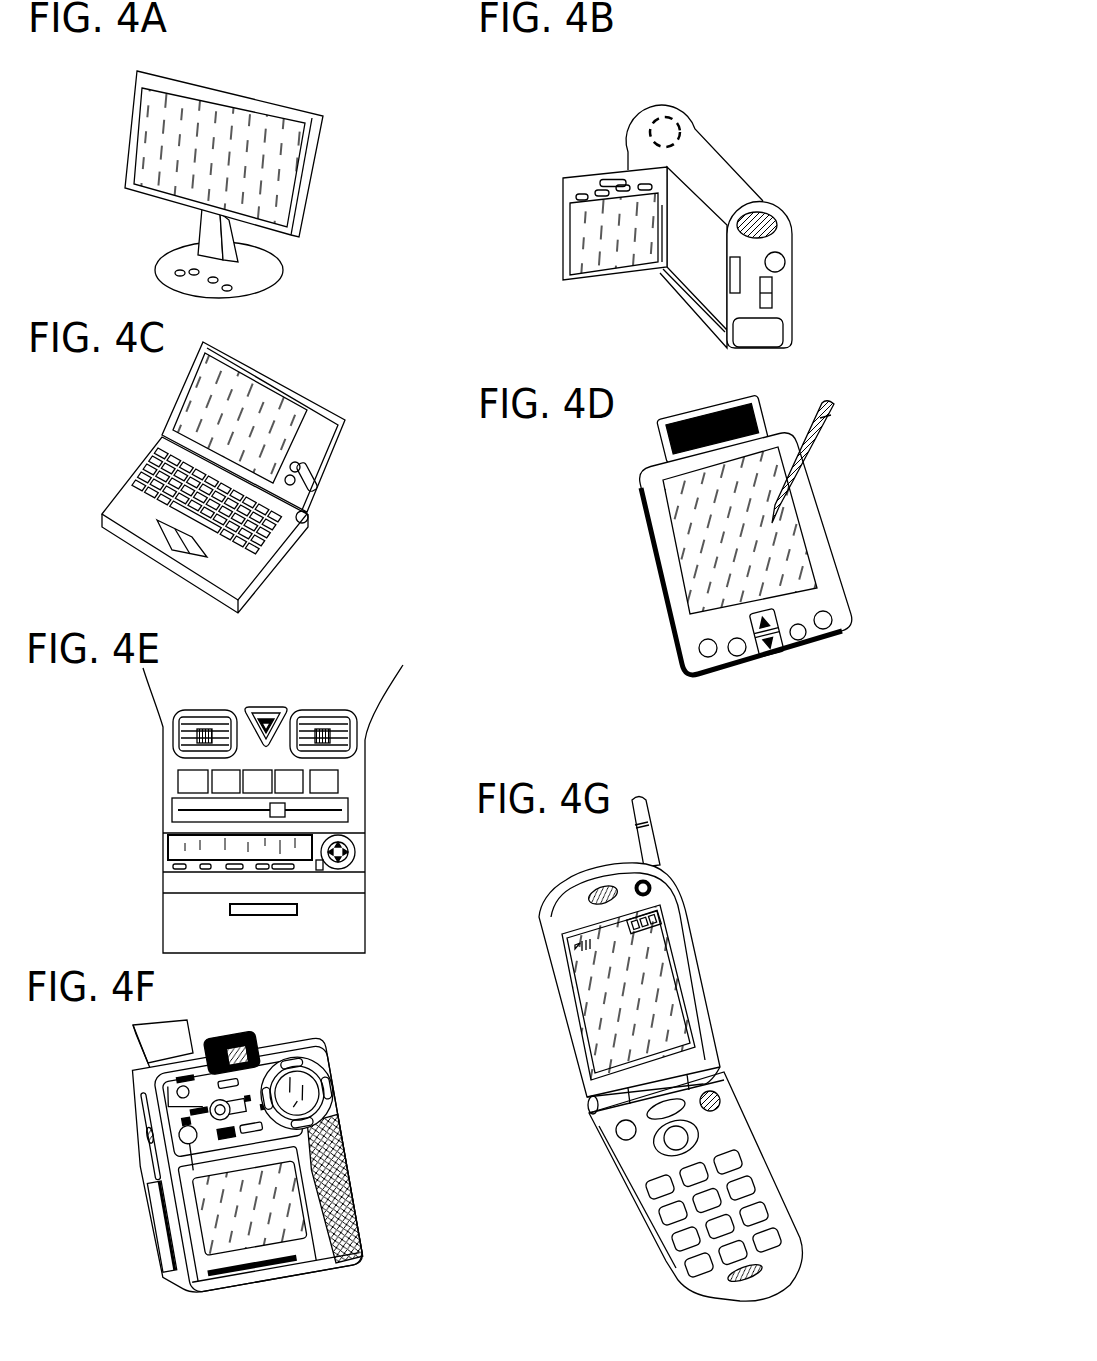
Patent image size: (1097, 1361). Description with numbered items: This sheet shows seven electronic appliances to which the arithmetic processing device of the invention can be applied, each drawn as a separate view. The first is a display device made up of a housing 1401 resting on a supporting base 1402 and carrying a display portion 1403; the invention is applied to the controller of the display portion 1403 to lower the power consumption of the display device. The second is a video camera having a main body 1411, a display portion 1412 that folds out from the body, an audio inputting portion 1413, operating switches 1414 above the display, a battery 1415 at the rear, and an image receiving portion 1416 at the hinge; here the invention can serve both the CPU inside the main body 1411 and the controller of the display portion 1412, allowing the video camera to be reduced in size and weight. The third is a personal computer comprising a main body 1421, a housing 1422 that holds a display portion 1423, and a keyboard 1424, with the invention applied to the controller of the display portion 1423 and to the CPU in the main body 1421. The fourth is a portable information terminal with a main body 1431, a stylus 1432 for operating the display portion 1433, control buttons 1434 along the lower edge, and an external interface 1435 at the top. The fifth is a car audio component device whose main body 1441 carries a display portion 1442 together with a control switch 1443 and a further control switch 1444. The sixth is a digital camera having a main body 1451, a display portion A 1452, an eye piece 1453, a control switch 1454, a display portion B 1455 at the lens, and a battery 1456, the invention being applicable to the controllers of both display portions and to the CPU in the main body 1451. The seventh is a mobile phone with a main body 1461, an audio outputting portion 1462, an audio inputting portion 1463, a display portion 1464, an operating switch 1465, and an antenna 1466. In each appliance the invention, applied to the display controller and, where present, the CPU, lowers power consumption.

In FIG. 4A, the housing 1401 is at (132, 138).
In FIG. 4A, the supporting base 1402 is at (225, 233).
In FIG. 4A, the display portion 1403 is at (218, 150).
In FIG. 4B, the main body 1411 is at (708, 160).
In FIG. 4B, the display portion 1412 is at (608, 250).
In FIG. 4B, the audio inputting portion 1413 is at (770, 224).
In FIG. 4B, the operating switches 1414 is at (608, 180).
In FIG. 4B, the battery 1415 is at (746, 330).
In FIG. 4B, the image receiving portion 1416 is at (662, 118).
In FIG. 4C, the main body 1421 is at (304, 523).
In FIG. 4C, the housing 1422 is at (176, 402).
In FIG. 4C, the display portion 1423 is at (293, 420).
In FIG. 4C, the keyboard 1424 is at (153, 540).
In FIG. 4D, the main body 1431 is at (672, 565).
In FIG. 4D, the stylus 1432 is at (817, 446).
In FIG. 4D, the display portion 1433 is at (690, 598).
In FIG. 4D, the control buttons 1434 is at (800, 637).
In FIG. 4D, the external interface 1435 is at (647, 460).
In FIG. 4E, the main body 1441 is at (360, 838).
In FIG. 4E, the display portion 1442 is at (170, 848).
In FIG. 4E, the control switch 1443 is at (178, 868).
In FIG. 4E, the control switch 1444 is at (357, 866).
In FIG. 4F, the main body 1451 is at (358, 1215).
In FIG. 4F, the display portion A 1452 is at (213, 1280).
In FIG. 4F, the eye piece 1453 is at (283, 1040).
In FIG. 4F, the control switch 1454 is at (293, 1064).
In FIG. 4F, the display portion B 1455 is at (300, 1105).
In FIG. 4F, the battery 1456 is at (325, 1267).
In FIG. 4G, the main body 1461 is at (622, 1157).
In FIG. 4G, the audio outputting portion 1462 is at (670, 892).
In FIG. 4G, the audio inputting portion 1463 is at (762, 1262).
In FIG. 4G, the display portion 1464 is at (649, 986).
In FIG. 4G, the operating switch 1465 is at (716, 1197).
In FIG. 4G, the antenna 1466 is at (647, 828).